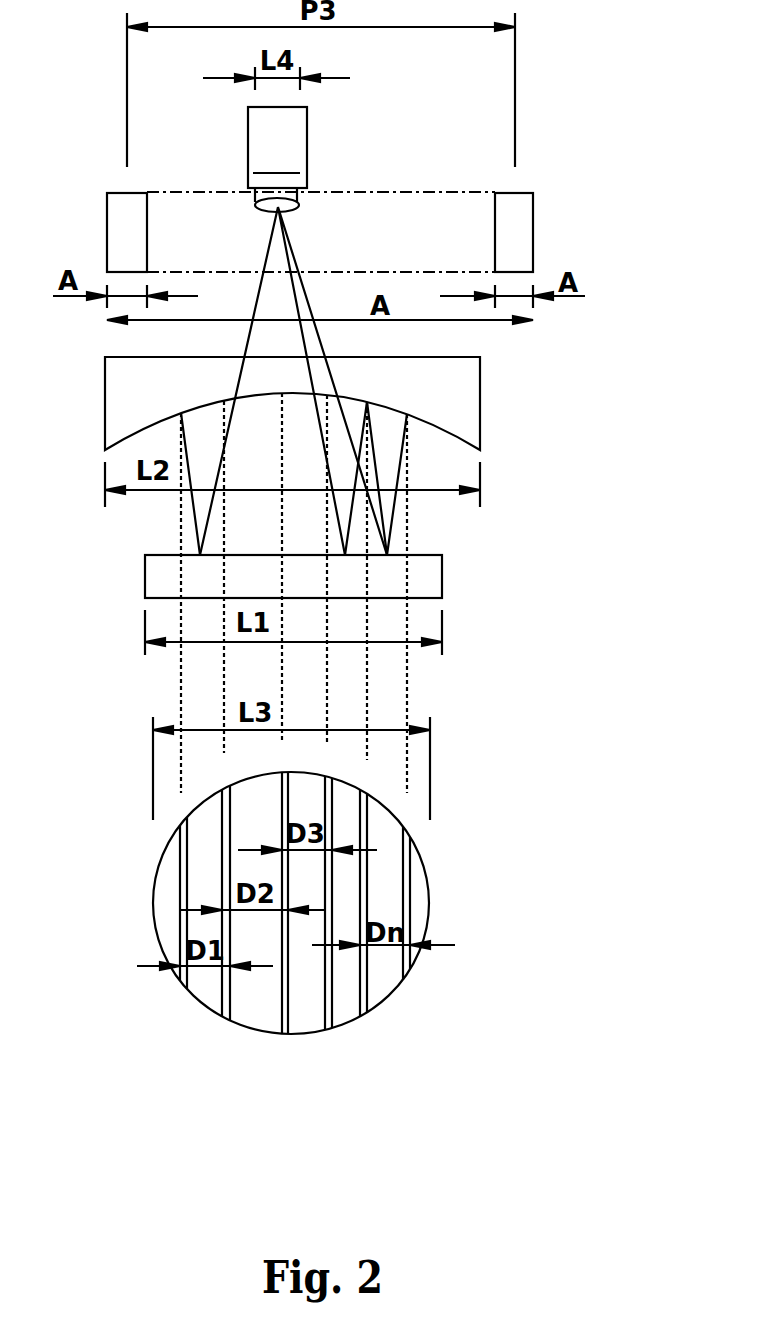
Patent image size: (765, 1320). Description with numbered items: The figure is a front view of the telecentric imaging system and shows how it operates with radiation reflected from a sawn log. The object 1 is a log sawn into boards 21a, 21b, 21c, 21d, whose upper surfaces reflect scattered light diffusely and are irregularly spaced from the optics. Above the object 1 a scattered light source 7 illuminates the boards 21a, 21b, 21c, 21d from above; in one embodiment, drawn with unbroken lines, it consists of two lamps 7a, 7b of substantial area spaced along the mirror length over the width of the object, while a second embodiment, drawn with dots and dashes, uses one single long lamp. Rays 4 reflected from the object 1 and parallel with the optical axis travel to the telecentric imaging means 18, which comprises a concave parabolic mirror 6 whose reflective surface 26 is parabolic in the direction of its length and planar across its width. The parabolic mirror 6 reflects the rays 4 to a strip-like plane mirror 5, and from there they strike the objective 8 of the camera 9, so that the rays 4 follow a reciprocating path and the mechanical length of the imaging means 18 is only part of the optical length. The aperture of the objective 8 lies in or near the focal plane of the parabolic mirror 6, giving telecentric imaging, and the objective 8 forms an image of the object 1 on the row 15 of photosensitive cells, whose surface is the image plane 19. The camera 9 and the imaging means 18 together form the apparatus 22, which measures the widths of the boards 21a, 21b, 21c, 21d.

The object 1 is at (420, 893).
The rays 4 is at (412, 687).
The plane mirror 5 is at (432, 580).
The parabolic mirror 6 is at (455, 405).
The light source 7 is at (440, 247).
The lamp 7a is at (128, 224).
The lamp 7b is at (517, 228).
The objective 8 is at (255, 205).
The camera 9 is at (300, 140).
The row of photosensitive cells 15 is at (302, 200).
The telecentric imaging means 18 is at (443, 533).
The image plane 19 is at (303, 198).
The board 21a is at (202, 1005).
The board 21b is at (263, 1015).
The board 21c is at (312, 1013).
The slot 21d is at (345, 1015).
The apparatus 22 is at (572, 435).
The reflective surface 26 is at (437, 428).